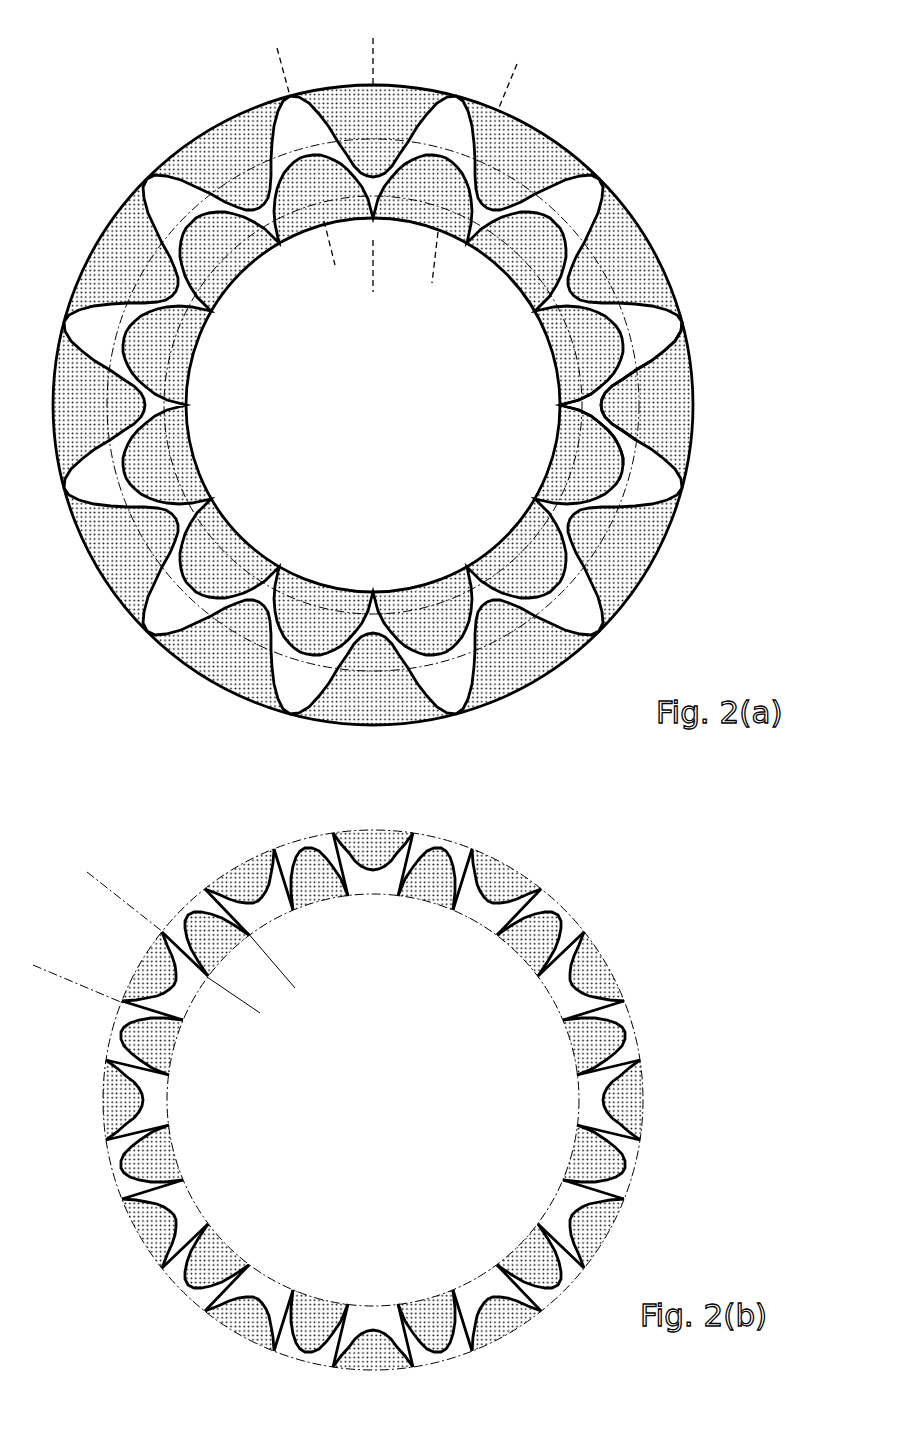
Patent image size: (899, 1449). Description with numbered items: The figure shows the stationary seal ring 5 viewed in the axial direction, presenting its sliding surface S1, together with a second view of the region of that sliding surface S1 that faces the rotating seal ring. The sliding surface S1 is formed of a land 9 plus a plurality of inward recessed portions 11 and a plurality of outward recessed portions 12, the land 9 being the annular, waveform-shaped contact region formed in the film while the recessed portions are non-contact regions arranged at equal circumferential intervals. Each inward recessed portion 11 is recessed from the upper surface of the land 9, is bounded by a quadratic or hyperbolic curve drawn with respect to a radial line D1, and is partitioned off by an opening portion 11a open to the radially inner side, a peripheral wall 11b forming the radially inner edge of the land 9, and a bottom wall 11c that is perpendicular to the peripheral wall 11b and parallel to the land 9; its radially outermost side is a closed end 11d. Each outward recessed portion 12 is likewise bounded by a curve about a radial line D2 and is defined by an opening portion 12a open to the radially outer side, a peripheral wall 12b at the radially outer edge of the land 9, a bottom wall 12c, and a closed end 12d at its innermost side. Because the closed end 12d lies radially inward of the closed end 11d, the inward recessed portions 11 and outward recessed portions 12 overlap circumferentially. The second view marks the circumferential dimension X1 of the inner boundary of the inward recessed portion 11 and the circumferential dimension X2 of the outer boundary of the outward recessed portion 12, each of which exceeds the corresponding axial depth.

In FIG. 2A, the stationary seal ring 5 is at (373, 362).
In FIG. 2B, the stationary seal ring 5 is at (373, 1069).
In FIG. 2A, the sliding surface S1 is at (578, 136).
In FIG. 2B, the sliding surface S1 is at (368, 822).
In FIG. 2A, the land 9 is at (450, 92).
In FIG. 2B, the land 9 is at (455, 850).
In FIG. 2A, the inward recessed portion 11 is at (537, 473).
In FIG. 2B, the inward recessed portion 11 is at (510, 957).
In FIG. 2A, the opening portion 11a is at (590, 405).
In FIG. 2A, the peripheral wall 11b is at (582, 486).
In FIG. 2A, the bottom wall 11c is at (562, 452).
In FIG. 2A, the closed end 11d is at (578, 430).
In FIG. 2A, the outward recessed portion 12 is at (697, 463).
In FIG. 2B, the outward recessed portion 12 is at (618, 952).
In FIG. 2A, the opening portion 12a is at (663, 386).
In FIG. 2A, the peripheral wall 12b is at (652, 428).
In FIG. 2A, the bottom wall 12c is at (640, 378).
In FIG. 2A, the closed end 12d is at (668, 398).
In FIG. 2A, the radial line D1 is at (566, 462).
In FIG. 2A, the radial line D2 is at (592, 405).
In FIG. 2B, the circumferential dimension X1 is at (283, 983).
In FIG. 2B, the circumferential dimension X2 is at (97, 885).